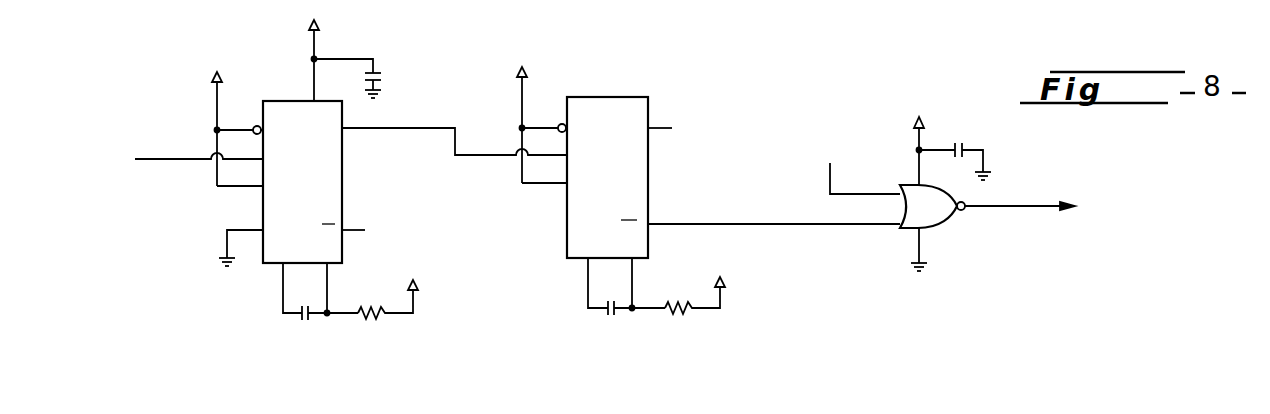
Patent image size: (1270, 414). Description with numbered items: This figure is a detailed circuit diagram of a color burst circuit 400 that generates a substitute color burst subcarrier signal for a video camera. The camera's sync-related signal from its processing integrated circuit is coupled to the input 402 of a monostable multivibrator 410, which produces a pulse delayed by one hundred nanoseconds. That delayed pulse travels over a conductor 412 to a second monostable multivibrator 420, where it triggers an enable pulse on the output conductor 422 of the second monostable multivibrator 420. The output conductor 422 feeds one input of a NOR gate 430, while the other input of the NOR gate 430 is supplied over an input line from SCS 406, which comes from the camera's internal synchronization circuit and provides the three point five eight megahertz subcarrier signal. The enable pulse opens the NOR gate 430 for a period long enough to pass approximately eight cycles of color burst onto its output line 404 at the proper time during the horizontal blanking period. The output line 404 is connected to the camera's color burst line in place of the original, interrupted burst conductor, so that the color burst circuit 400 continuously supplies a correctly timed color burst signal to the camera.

The color burst circuit 400 is at (816, 285).
The input 402 is at (158, 159).
The output line 404 is at (998, 206).
The input line from SCS 406 is at (829, 187).
The monostable multivibrator 410 is at (342, 198).
The conductor 412 is at (414, 128).
The second monostable multivibrator 420 is at (567, 201).
The output conductor 422 is at (655, 224).
The NOR gate 430 is at (905, 229).